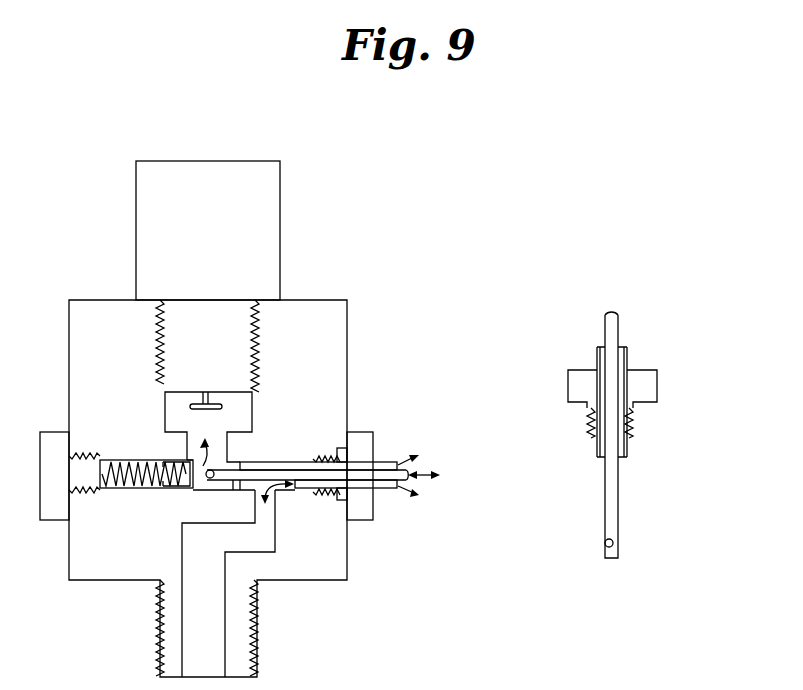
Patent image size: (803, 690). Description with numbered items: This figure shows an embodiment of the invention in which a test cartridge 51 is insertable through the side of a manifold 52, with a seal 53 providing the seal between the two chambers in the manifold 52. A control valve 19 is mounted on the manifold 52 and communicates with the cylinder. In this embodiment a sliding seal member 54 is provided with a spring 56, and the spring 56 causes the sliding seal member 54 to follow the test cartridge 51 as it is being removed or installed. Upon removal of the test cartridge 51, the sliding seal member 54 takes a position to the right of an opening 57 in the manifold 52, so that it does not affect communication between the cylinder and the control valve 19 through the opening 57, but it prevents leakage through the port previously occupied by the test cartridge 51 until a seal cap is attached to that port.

The control valve 19 is at (250, 237).
The test cartridge 51 is at (659, 379).
The manifold 52 is at (347, 370).
The seal 53 is at (240, 464).
The sliding seal member 54 is at (172, 490).
The spring 56 is at (138, 470).
The opening 57 is at (266, 522).